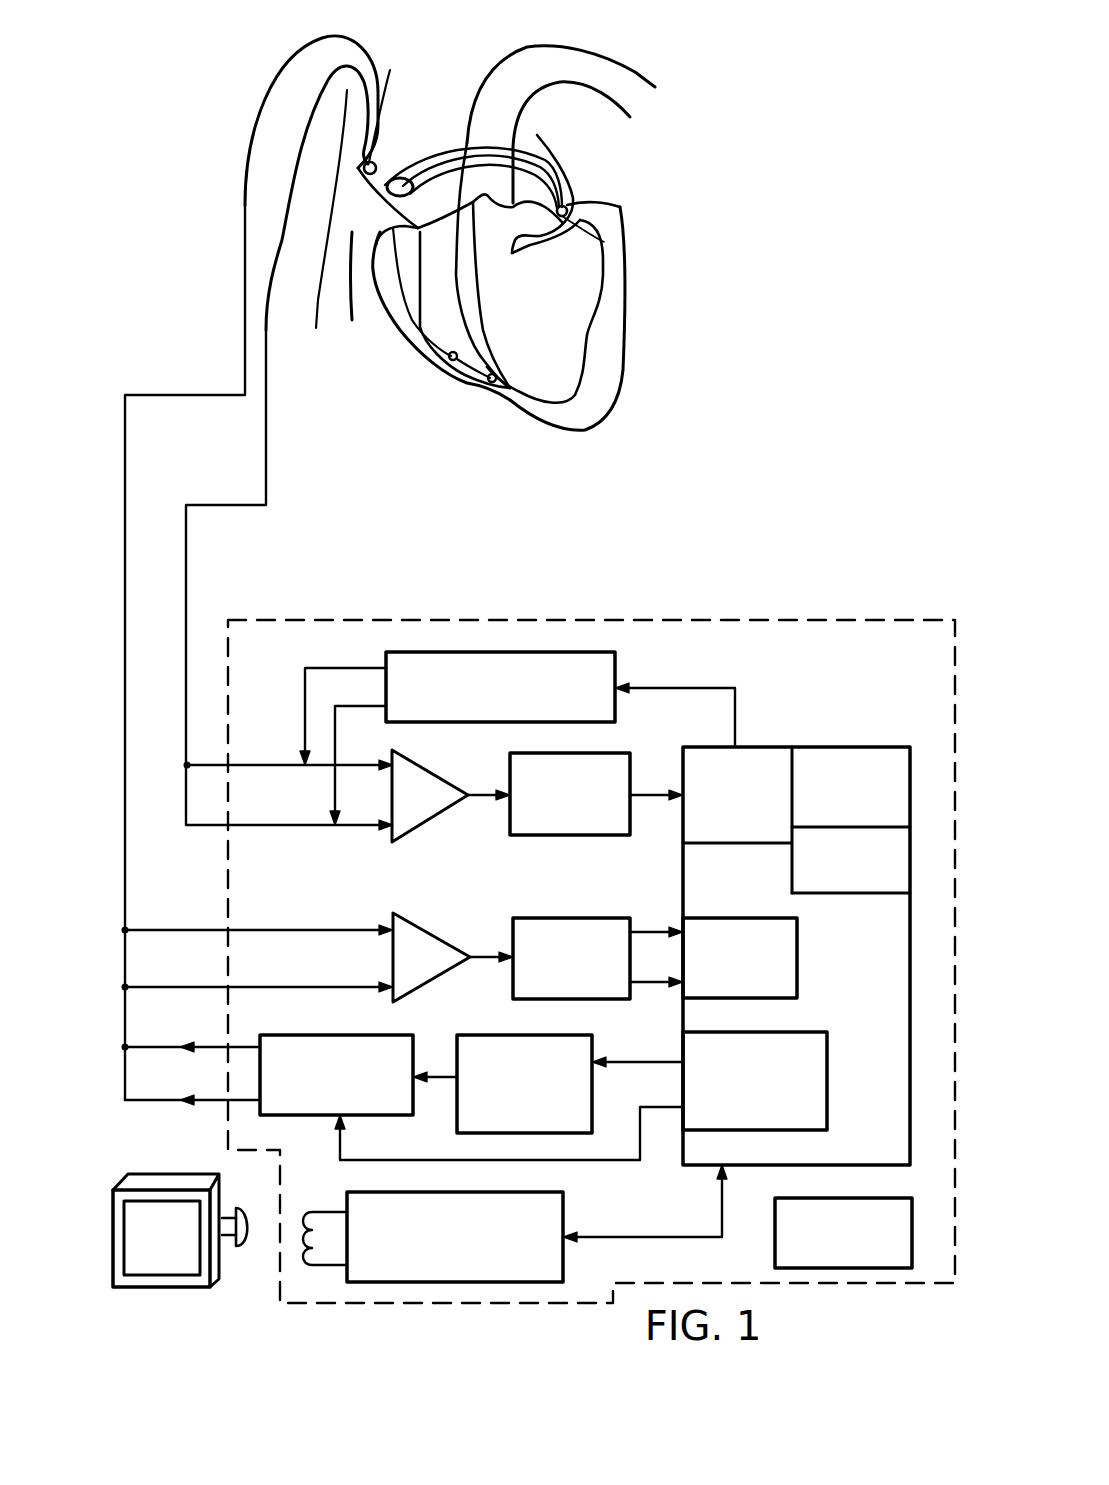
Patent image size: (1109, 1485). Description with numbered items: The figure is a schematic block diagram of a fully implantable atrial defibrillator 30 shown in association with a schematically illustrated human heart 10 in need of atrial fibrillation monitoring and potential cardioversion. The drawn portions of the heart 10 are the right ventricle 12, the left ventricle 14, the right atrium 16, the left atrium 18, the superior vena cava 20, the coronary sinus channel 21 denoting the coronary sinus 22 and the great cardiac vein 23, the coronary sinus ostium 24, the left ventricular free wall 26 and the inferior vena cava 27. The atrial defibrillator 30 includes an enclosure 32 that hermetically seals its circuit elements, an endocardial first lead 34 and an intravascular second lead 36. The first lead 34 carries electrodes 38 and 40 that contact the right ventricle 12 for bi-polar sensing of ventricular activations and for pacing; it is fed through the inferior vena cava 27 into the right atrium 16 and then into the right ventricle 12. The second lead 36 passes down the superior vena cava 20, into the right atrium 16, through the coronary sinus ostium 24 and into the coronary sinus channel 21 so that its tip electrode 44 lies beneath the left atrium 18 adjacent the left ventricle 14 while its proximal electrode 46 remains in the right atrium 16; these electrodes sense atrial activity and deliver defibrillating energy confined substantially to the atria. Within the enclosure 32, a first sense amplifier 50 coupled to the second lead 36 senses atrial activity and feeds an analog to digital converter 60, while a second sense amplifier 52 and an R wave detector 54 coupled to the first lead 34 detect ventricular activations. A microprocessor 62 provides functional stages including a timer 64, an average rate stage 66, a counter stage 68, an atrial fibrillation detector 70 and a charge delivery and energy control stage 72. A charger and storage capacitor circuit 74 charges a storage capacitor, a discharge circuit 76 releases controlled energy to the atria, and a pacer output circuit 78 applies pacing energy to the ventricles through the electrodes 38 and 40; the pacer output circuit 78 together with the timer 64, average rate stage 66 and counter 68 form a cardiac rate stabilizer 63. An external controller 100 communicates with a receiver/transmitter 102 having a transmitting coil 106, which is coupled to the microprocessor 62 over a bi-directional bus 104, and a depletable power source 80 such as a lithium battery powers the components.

The human heart 10 is at (862, 140).
The right ventricle 12 is at (407, 318).
The left ventricle 14 is at (596, 330).
The right atrium 16 is at (322, 203).
The left atrium 18 is at (540, 142).
The superior vena cava 20 is at (385, 97).
The coronary sinus channel 21 is at (490, 140).
The coronary sinus 22 is at (461, 148).
The great cardiac vein 23 is at (557, 168).
The coronary sinus ostium 24 is at (403, 178).
The left ventricular free wall 26 is at (570, 209).
The inferior vena cava 27 is at (331, 308).
The atrial defibrillator 30 is at (591, 901).
The enclosure 32 is at (626, 618).
The endocardial first lead 34 is at (267, 440).
The intravascular second lead 36 is at (244, 362).
The electrode 38 is at (492, 384).
The electrode 40 is at (449, 361).
The first or tip electrode 44 is at (606, 241).
The second or proximal electrode 46 is at (363, 168).
The first sense amplifier 50 is at (417, 925).
The second sense amplifier 52 is at (422, 812).
The R wave detector 54 is at (549, 838).
The analog to digital converter 60 is at (559, 918).
The microprocessor 62 is at (640, 921).
The cardiac rate stabilizer 63 is at (813, 785).
The timer 64 is at (718, 845).
The average rate stage 66 is at (908, 790).
The counter stage 68 is at (908, 857).
The atrial fibrillation detector 70 is at (798, 950).
The charge delivery and energy control stage 72 is at (828, 1063).
The charger and storage capacitor circuit 74 is at (515, 1037).
The discharge circuit 76 is at (306, 1037).
The pacer output circuit 78 is at (495, 657).
The depletable power source 80 is at (845, 1195).
The external controller 100 is at (160, 1289).
The receiver/transmitter 102 is at (437, 1194).
The bi-directional bus 104 is at (604, 1237).
The transmitting coil 106 is at (321, 1257).